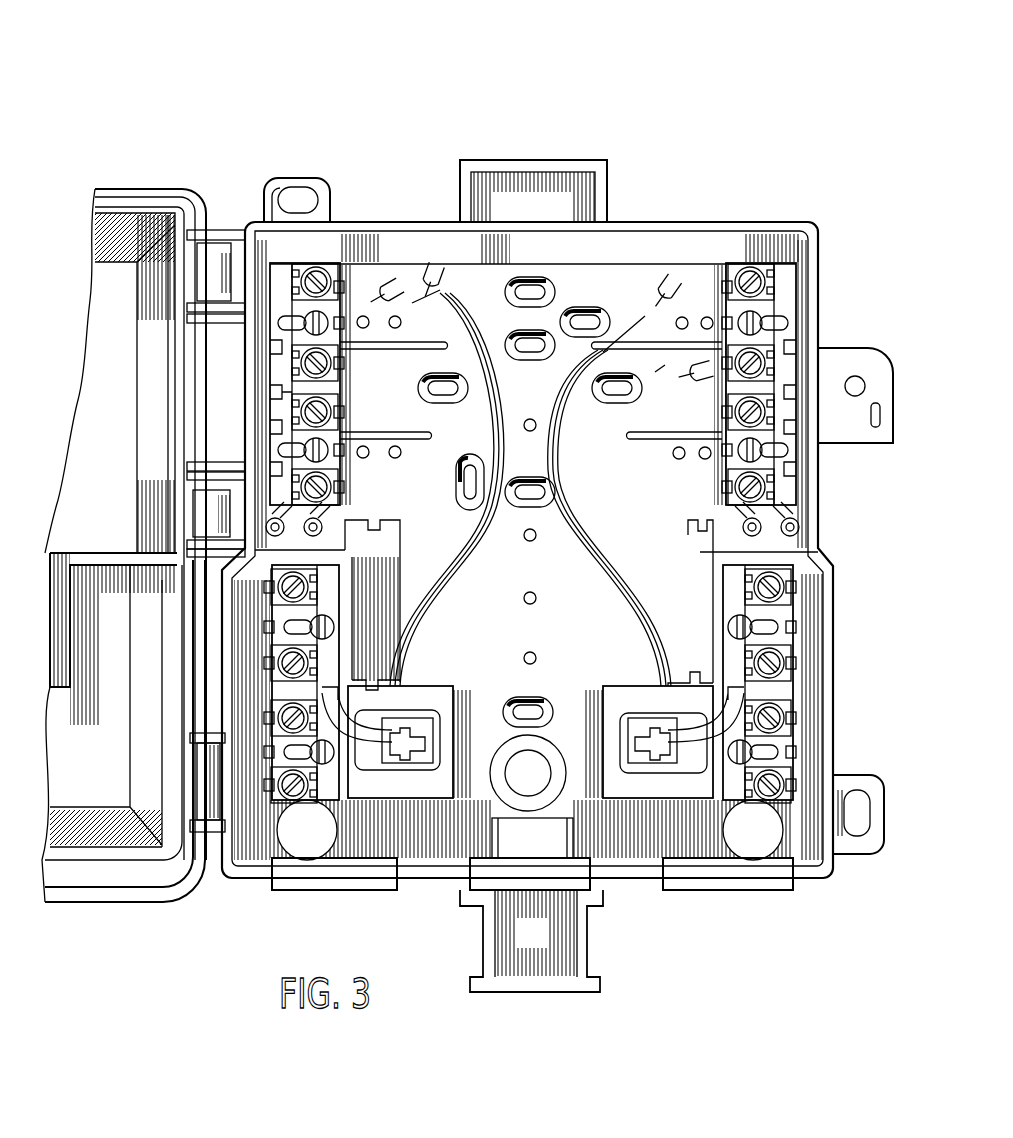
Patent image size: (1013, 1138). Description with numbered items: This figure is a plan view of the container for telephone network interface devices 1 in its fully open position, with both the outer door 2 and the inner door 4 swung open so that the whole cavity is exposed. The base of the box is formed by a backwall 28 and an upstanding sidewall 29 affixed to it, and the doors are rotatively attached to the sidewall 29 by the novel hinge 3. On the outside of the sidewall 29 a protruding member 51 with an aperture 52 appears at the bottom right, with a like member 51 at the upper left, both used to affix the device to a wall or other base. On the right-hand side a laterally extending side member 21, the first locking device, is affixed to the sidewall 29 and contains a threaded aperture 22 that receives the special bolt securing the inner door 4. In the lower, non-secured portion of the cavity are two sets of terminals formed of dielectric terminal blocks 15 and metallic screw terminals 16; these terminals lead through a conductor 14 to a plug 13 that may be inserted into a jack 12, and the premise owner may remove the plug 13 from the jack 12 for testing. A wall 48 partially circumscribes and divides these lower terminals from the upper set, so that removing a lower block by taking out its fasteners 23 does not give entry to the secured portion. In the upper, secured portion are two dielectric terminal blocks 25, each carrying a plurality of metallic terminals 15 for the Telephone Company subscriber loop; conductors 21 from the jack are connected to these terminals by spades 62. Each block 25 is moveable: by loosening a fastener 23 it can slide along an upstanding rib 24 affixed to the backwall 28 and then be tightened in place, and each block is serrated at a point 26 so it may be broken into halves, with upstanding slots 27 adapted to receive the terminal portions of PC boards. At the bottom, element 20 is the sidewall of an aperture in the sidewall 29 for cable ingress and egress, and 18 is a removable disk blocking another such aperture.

The container for telephone network interface devices 1 is at (468, 118).
The outer door 2 is at (105, 731).
The hinge 3 is at (224, 205).
The inner door 4 is at (95, 421).
The jack 12 is at (426, 760).
The plug 13 is at (412, 727).
The conductor 14 is at (380, 745).
The dielectric terminal block 15 is at (316, 272).
The terminal metallic screw member 16 is at (333, 805).
The removable disk 18 is at (316, 887).
The sidewall of aperture 20 is at (521, 948).
The side member 21 is at (845, 350).
The threaded aperture 22 is at (852, 390).
The fastener 23 is at (300, 327).
The rib 24 is at (445, 349).
The dielectric terminal block 25 is at (287, 270).
The serrated point 26 is at (276, 395).
The upstanding slot 27 is at (344, 287).
The backwall 28 is at (516, 641).
The upstanding sidewall 29 is at (635, 224).
The wall 48 is at (345, 553).
The protruding member 51 is at (290, 180).
The aperture 52 is at (318, 200).
The spade 62 is at (413, 303).